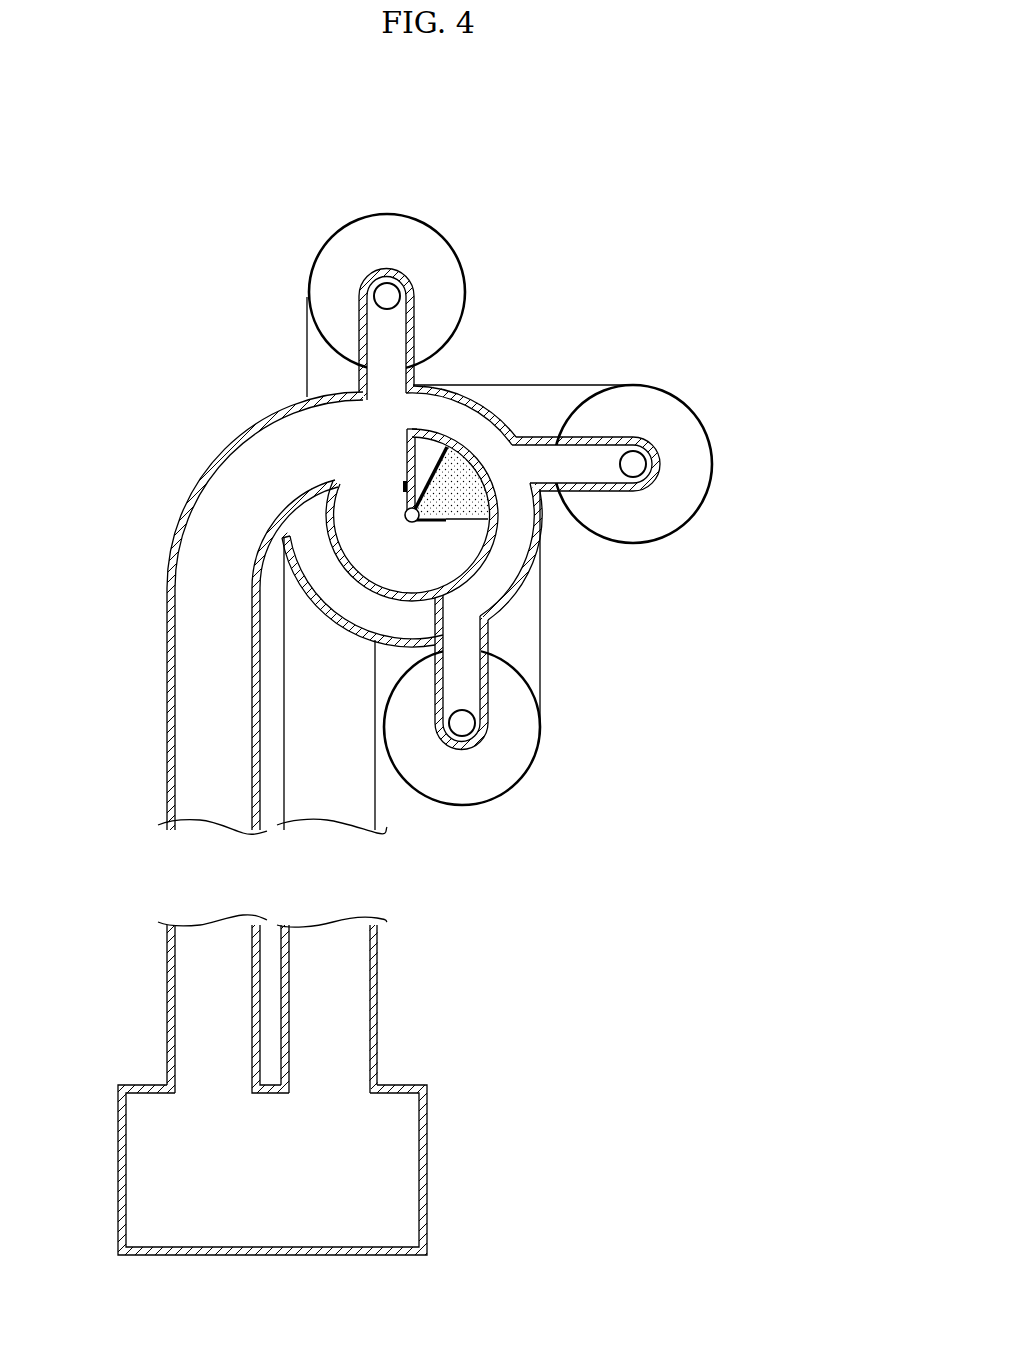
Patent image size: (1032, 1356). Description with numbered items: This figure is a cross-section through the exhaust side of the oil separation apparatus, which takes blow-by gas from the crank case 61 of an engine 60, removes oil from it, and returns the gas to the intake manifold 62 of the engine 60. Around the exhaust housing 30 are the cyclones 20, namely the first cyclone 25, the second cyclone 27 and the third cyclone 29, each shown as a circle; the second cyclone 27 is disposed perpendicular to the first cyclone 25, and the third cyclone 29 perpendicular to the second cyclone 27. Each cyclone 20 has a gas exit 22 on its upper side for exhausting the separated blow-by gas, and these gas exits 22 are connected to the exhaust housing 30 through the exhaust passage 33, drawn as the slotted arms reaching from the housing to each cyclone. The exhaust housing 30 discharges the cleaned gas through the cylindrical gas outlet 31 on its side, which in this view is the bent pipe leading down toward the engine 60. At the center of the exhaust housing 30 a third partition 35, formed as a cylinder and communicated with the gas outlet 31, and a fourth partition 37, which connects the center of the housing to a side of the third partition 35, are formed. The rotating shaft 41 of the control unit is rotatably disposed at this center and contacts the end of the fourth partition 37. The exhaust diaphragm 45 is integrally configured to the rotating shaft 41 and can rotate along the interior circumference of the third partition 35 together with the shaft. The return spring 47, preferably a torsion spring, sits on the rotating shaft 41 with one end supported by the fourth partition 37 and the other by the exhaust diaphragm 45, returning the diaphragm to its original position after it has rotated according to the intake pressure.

The cyclones 20 is at (576, 500).
The gas exit 22 is at (366, 297).
The first cyclone 25 is at (395, 228).
The second cyclone 27 is at (695, 468).
The third cyclone 29 is at (520, 752).
The exhaust housing 30 is at (489, 428).
The gas outlet 31 is at (186, 766).
The exhaust passage 33 is at (605, 436).
The third partition 35 is at (491, 548).
The fourth partition 37 is at (402, 438).
The rotating shaft 41 is at (404, 515).
The exhaust diaphragm 45 is at (462, 483).
The return spring 47 is at (402, 486).
The engine 60 is at (426, 1168).
The crank case 61 is at (380, 1002).
The intake manifold 62 is at (166, 1000).